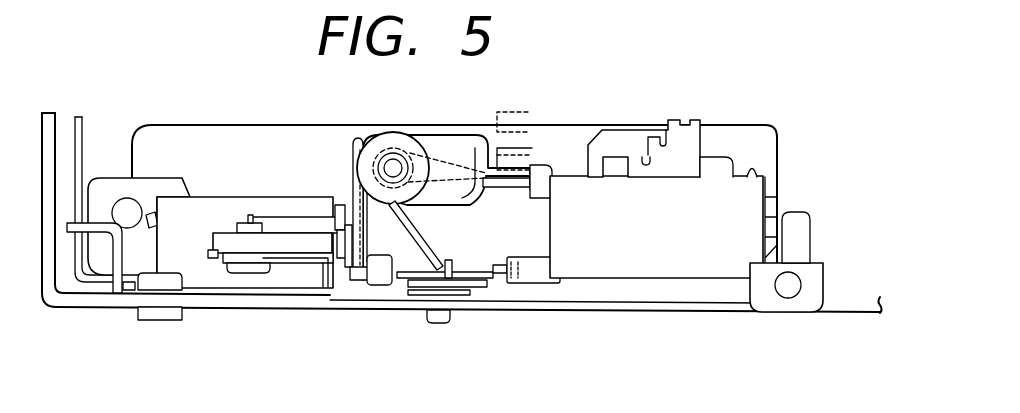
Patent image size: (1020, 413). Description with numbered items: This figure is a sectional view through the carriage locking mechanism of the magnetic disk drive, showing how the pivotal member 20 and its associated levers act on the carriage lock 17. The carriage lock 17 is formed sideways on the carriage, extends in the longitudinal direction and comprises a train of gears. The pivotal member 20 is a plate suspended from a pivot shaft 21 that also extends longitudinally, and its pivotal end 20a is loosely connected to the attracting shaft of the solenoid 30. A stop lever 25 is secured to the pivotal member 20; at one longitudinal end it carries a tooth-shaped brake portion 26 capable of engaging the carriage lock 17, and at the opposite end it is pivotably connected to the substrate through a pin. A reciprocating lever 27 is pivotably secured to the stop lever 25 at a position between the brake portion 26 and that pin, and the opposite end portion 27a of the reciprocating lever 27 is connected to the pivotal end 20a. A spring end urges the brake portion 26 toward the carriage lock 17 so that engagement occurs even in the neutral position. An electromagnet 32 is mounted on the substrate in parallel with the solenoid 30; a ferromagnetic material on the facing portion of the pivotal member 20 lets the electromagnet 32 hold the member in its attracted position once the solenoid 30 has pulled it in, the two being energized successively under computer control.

The carriage lock 17 is at (543, 272).
The pivotal member 20 is at (347, 178).
The pivotal end 20a is at (358, 272).
The pivot shaft 21 is at (385, 150).
The stop lever 25 is at (483, 292).
The brake portion 26 is at (495, 265).
The reciprocating lever 27 is at (405, 278).
The end portion of reciprocating lever 27a is at (350, 283).
The solenoid 30 is at (225, 205).
The electromagnet 32 is at (240, 245).